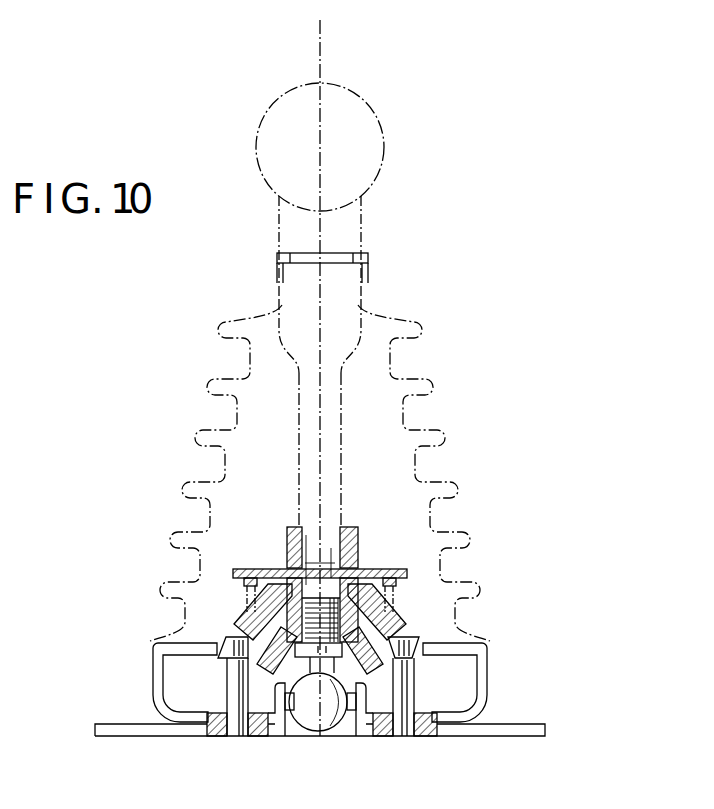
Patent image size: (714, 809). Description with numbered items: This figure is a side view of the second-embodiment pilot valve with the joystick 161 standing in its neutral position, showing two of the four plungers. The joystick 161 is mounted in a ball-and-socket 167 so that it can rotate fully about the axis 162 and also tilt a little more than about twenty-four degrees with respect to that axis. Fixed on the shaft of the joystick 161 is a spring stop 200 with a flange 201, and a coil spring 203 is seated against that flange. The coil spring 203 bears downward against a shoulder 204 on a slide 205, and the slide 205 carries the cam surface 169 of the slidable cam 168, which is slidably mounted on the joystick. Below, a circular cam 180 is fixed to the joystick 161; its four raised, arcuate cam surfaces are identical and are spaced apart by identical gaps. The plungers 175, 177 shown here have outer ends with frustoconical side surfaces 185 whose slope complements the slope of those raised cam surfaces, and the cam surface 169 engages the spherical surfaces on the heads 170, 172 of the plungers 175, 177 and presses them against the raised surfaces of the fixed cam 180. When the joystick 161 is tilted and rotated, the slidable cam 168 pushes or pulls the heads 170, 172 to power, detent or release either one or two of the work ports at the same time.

The axis 162 is at (322, 230).
The joystick 161 is at (330, 470).
The shoulder 204 is at (196, 585).
The spring stop 200 is at (376, 563).
The slide 205 is at (268, 566).
The flange 201 is at (253, 566).
The coil spring 203 is at (412, 588).
The slidable cam 168 is at (402, 607).
The cam surface 169 is at (224, 646).
The frustoconical side surfaces 185 is at (226, 662).
The head 170 is at (185, 623).
The head 172 is at (492, 645).
The plunger 175 is at (235, 740).
The plunger 177 is at (407, 737).
The circular cam 180 is at (373, 737).
The ball-and-socket 167 is at (314, 722).